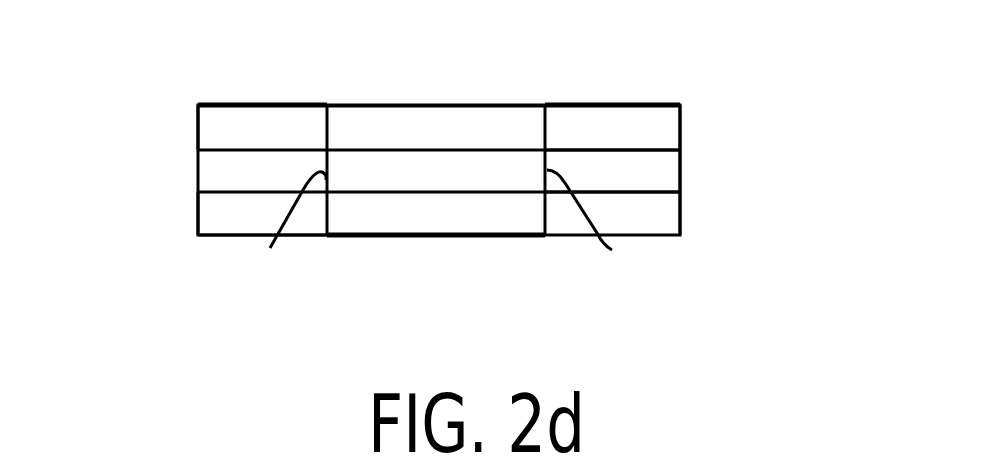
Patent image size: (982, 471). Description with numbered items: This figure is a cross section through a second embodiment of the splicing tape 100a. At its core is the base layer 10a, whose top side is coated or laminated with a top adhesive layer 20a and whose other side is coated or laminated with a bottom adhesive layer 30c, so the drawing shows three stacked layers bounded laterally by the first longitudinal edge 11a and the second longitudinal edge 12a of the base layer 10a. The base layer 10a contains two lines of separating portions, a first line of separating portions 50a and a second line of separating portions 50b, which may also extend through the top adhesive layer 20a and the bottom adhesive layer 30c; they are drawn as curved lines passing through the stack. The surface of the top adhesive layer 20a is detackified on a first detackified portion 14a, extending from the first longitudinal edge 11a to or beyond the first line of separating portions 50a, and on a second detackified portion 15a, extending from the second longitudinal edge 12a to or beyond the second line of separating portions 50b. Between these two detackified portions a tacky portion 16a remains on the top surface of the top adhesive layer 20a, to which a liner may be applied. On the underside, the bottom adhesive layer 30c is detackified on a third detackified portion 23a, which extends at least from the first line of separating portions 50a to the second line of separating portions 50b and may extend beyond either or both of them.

The splicing tape 100a is at (740, 86).
The first detackified portion 14a is at (262, 107).
The tacky portion 16a is at (440, 107).
The second detackified portion 15a is at (615, 107).
The top adhesive layer 20a is at (198, 120).
The first longitudinal edge 11a is at (198, 170).
The bottom adhesive layer 30c is at (198, 222).
The base layer 10a is at (668, 167).
The second longitudinal edge 12a is at (680, 182).
The third detackified portion 23a is at (442, 240).
The first line of separating portions 50a is at (270, 248).
The second line of separating portions 50b is at (612, 250).